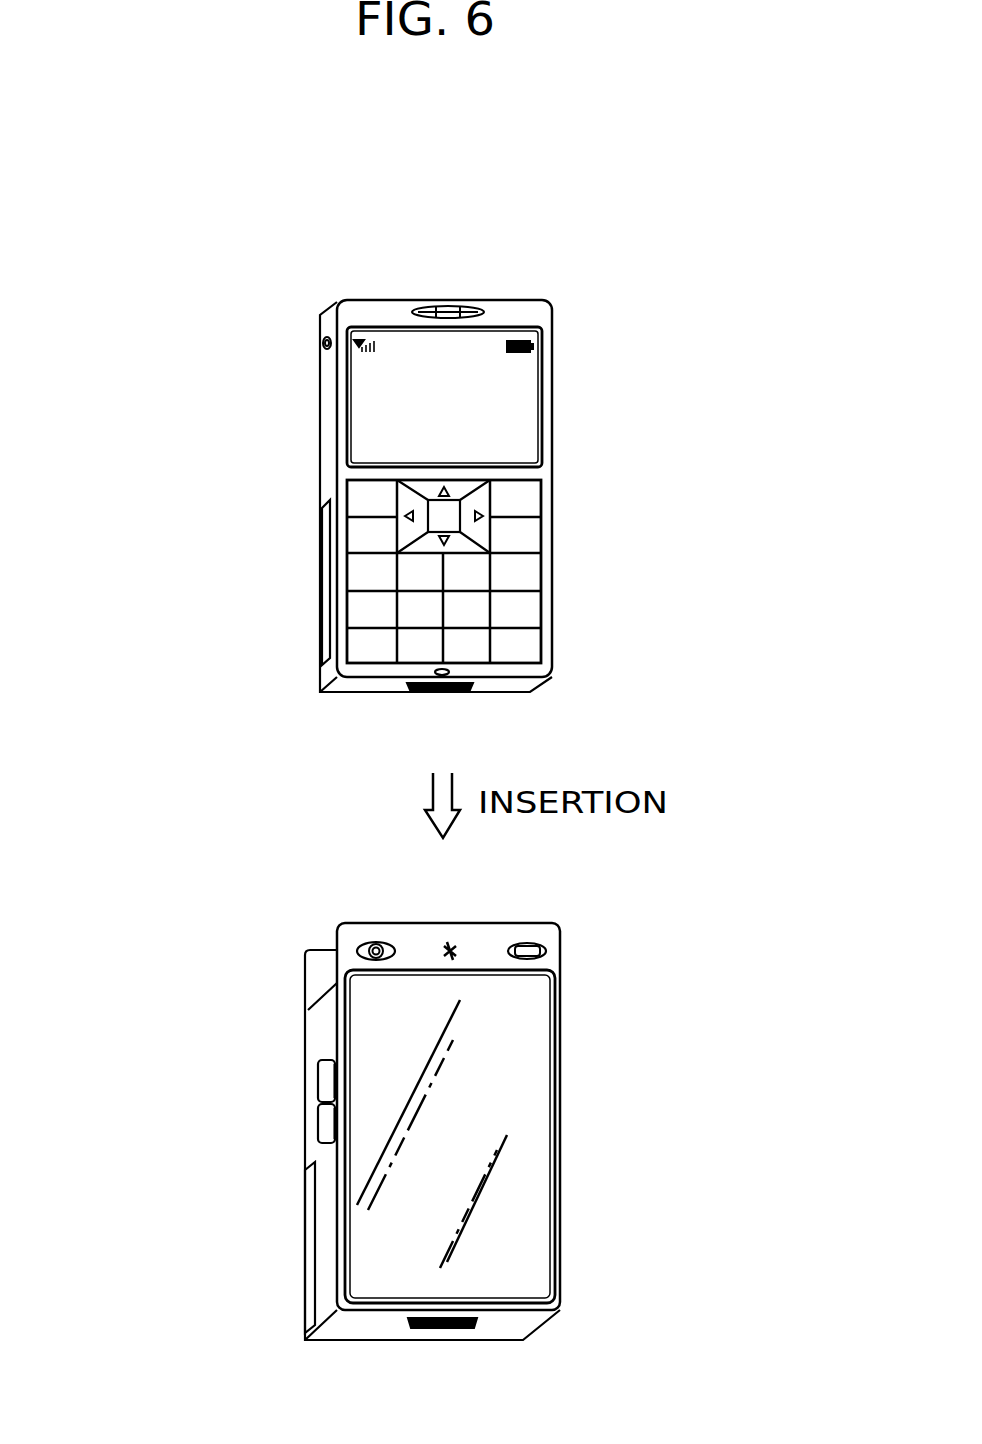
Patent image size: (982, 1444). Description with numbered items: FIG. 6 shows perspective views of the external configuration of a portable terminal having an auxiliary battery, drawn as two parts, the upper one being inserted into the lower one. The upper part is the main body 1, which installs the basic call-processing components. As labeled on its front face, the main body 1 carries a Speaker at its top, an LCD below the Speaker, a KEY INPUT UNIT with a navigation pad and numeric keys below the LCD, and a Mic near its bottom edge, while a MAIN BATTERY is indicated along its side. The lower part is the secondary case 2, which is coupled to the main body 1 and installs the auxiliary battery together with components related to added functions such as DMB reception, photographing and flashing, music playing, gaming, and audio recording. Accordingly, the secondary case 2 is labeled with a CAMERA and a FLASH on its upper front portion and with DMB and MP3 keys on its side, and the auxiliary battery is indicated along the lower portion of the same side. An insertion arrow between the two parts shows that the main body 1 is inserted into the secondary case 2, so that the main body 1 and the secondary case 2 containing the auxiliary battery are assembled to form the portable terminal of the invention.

The main body 1 is at (598, 421).
The secondary case 2 is at (602, 1038).
The speaker Speaker is at (458, 307).
The LCD display LCD is at (528, 378).
The key input unit KEY INPUT UNIT is at (540, 577).
The main battery MAIN BATTERY is at (320, 573).
The microphone Mic is at (449, 672).
The camera CAMERA is at (356, 951).
The flash FLASH is at (546, 951).
The DMB button DMB is at (318, 1085).
The MP3 button MP3 is at (318, 1128).